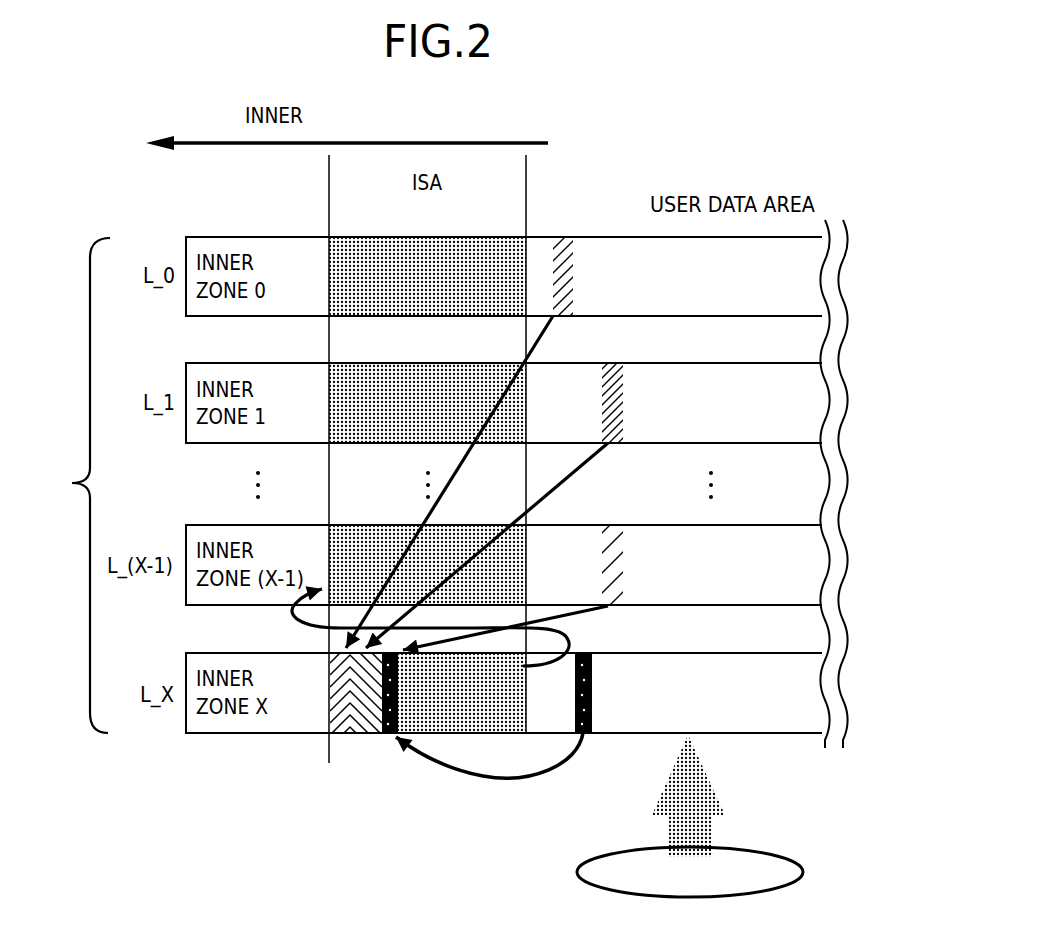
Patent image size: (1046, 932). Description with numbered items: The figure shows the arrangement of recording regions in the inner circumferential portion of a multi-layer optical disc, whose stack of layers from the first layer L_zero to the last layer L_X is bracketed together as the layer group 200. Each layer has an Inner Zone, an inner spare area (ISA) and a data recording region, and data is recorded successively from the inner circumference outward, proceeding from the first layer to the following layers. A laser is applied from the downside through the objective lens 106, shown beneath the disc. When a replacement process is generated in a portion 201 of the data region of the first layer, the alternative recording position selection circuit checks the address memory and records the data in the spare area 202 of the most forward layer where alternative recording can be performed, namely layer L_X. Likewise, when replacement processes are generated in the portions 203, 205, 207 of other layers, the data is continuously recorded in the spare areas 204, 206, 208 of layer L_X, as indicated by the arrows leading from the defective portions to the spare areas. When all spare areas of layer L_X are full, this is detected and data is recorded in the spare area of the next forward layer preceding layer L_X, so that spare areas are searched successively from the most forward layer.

The objective lens 106 is at (773, 855).
The inner zones of disk 200 is at (62, 485).
The portion 201 is at (562, 243).
The spare area 202 is at (345, 720).
The portion 203 is at (610, 365).
The spare area 204 is at (360, 730).
The portion 205 is at (612, 528).
The spare area 206 is at (373, 733).
The portion 207 is at (590, 655).
The spare area 208 is at (387, 733).